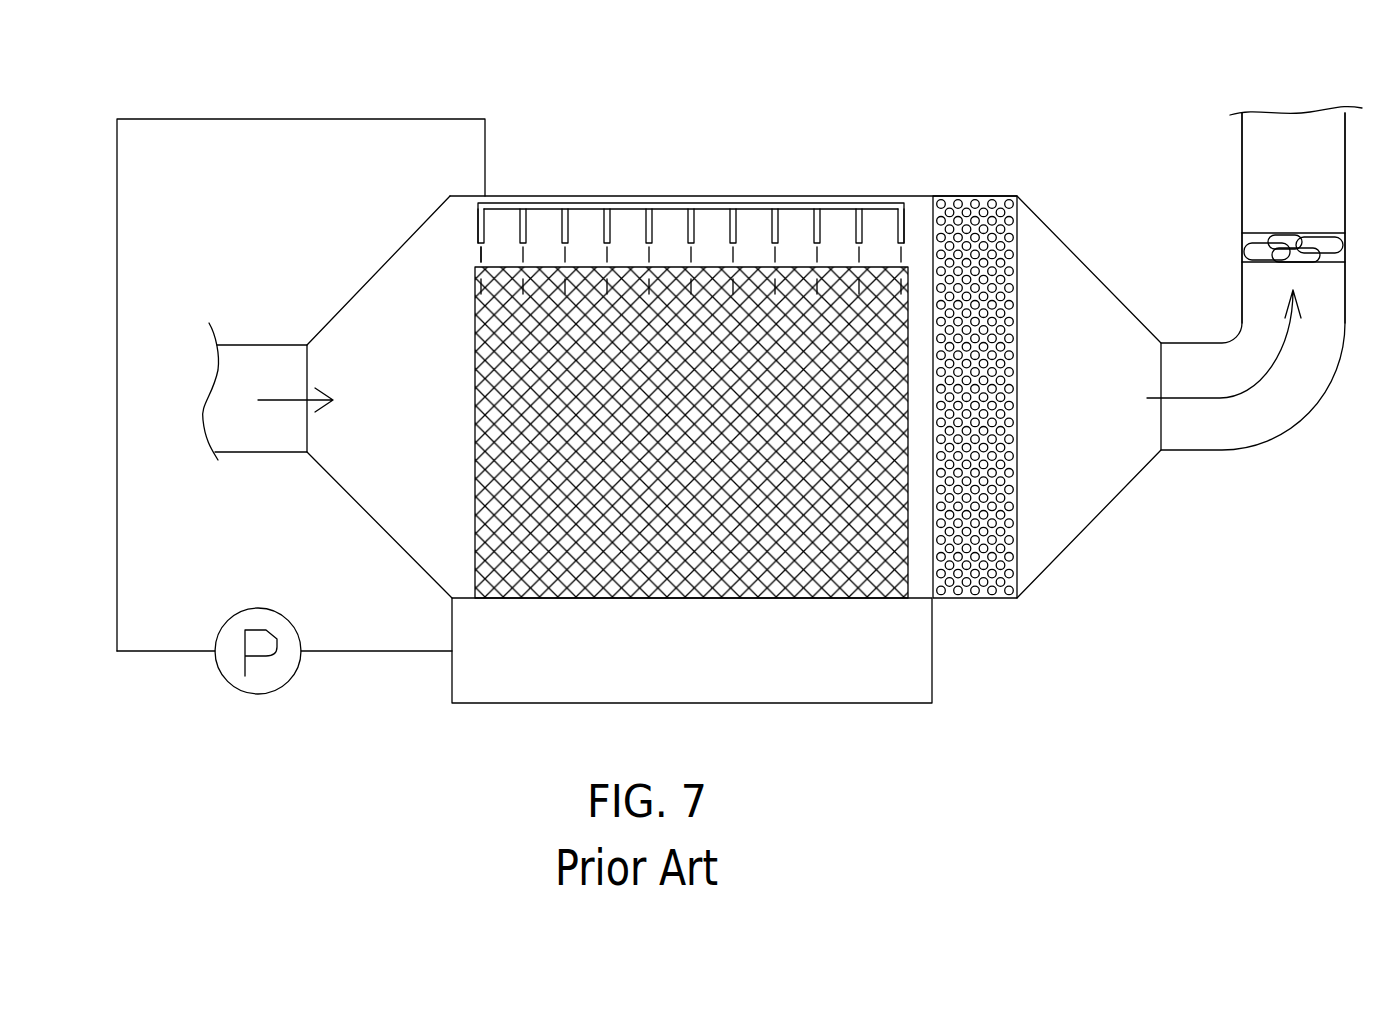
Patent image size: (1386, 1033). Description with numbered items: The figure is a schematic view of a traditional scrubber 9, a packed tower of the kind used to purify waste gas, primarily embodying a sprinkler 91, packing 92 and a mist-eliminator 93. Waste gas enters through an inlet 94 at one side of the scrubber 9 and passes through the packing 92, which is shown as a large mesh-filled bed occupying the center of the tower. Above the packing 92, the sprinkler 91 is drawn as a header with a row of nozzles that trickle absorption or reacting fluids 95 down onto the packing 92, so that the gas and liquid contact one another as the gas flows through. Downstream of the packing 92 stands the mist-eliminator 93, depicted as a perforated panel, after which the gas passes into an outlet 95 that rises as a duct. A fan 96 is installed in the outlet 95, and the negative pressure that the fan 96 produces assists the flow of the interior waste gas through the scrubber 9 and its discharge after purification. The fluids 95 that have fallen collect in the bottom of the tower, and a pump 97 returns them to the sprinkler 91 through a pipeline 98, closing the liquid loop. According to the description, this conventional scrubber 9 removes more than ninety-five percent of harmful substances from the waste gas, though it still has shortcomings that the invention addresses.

The scrubber 9 is at (825, 193).
The sprinkler 91 is at (567, 227).
The packing 92 is at (746, 365).
The mist-eliminator 93 is at (957, 208).
The inlet 94 is at (240, 363).
The absorption or reacting fluids / outlet 95 is at (480, 255).
The fan 96 is at (1248, 237).
The pump 97 is at (225, 678).
The pipeline 98 is at (387, 651).